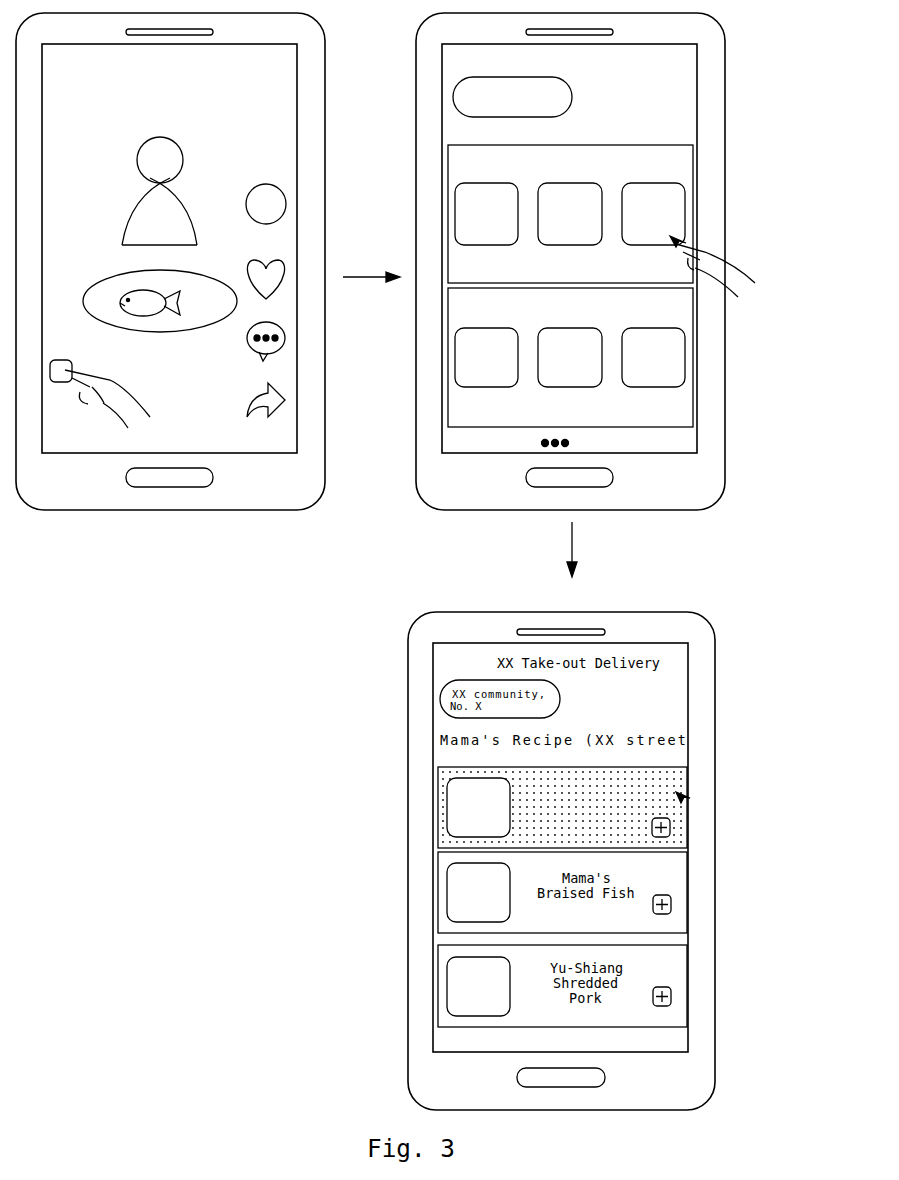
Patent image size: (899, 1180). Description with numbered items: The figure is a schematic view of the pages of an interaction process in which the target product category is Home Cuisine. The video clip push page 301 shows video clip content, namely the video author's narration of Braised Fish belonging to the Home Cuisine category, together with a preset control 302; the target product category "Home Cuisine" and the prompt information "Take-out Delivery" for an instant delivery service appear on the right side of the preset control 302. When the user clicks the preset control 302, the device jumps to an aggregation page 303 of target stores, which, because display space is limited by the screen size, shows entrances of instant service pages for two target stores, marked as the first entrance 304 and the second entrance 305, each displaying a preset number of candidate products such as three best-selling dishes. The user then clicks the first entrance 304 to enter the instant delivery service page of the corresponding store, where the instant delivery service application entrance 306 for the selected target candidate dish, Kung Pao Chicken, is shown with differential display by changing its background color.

The video clip push page 301 is at (191, 261).
The preset control 302 is at (63, 360).
The aggregation page 303 is at (602, 261).
The first entrance 304 is at (698, 155).
The second entrance 305 is at (687, 398).
The instant delivery service application entrance 306 is at (687, 787).